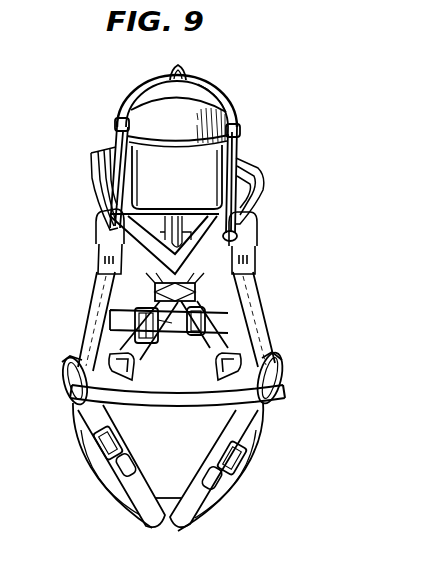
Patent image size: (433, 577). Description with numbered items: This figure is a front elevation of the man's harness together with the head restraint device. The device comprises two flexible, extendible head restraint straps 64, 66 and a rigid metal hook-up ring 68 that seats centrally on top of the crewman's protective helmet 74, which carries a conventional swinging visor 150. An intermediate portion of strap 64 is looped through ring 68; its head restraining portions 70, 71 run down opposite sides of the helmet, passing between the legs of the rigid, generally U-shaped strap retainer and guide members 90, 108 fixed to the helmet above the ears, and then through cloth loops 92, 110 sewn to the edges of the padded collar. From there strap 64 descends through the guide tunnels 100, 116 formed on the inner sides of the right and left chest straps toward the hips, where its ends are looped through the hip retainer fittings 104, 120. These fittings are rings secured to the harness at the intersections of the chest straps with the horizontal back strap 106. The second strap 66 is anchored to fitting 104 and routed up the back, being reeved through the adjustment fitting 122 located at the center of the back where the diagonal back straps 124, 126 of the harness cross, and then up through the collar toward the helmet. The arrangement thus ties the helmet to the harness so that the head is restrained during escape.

The head restraint strap 64 is at (231, 104).
The head restraint strap 66 is at (174, 228).
The hook-up ring 68 is at (177, 67).
The head restraining portion 70 is at (133, 100).
The head restraining portion 71 is at (208, 93).
The protective helmet 74 is at (155, 97).
The strap retainer and guide member 90 is at (116, 127).
The cloth loop 92 is at (100, 154).
The guide tunnel 100 is at (102, 297).
The hip retainer fitting 104 is at (65, 385).
The horizontal back strap 106 is at (171, 398).
The strap retainer and guide member 108 is at (240, 130).
The cloth loop 110 is at (244, 166).
The guide tunnel 116 is at (240, 298).
The retainer fitting 120 is at (280, 392).
The adjustment fitting 122 is at (240, 277).
The diagonal back strap 124 is at (130, 358).
The diagonal back strap 126 is at (210, 349).
The visor 150 is at (215, 122).